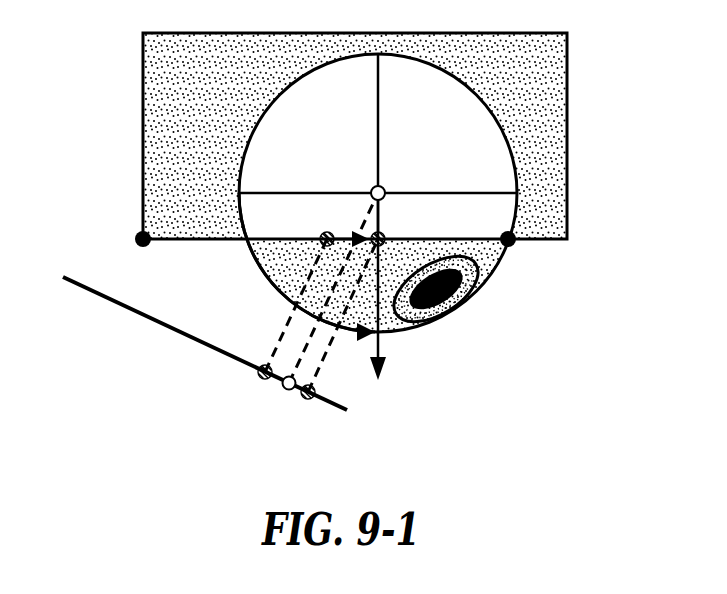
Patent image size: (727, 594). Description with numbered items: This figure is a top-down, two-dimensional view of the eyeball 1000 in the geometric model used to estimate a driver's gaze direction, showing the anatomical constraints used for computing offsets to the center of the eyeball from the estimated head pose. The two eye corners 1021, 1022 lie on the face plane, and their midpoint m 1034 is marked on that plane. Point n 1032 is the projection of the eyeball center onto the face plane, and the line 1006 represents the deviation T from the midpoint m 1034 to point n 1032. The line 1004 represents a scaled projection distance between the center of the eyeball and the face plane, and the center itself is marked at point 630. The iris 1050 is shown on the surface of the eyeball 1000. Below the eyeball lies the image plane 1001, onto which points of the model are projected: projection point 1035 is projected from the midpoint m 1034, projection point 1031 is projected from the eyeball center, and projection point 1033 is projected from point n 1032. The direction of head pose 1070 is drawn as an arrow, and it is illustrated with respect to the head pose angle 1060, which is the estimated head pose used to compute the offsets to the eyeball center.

The eyeball 1000 is at (440, 102).
The center point 630 is at (372, 188).
The image plane 1001 is at (222, 353).
The line 1004 is at (383, 232).
The line 1006 is at (352, 234).
The eye corner 1021 is at (138, 236).
The eye corner 1022 is at (513, 245).
The projection point 1031 is at (260, 378).
The point n 1032 is at (386, 234).
The projection point 1033 is at (310, 399).
The midpoint m 1034 is at (321, 245).
The projection point 1035 is at (265, 368).
The iris 1050 is at (474, 292).
The head pose angle 1060 is at (350, 334).
The direction of head pose 1070 is at (381, 318).